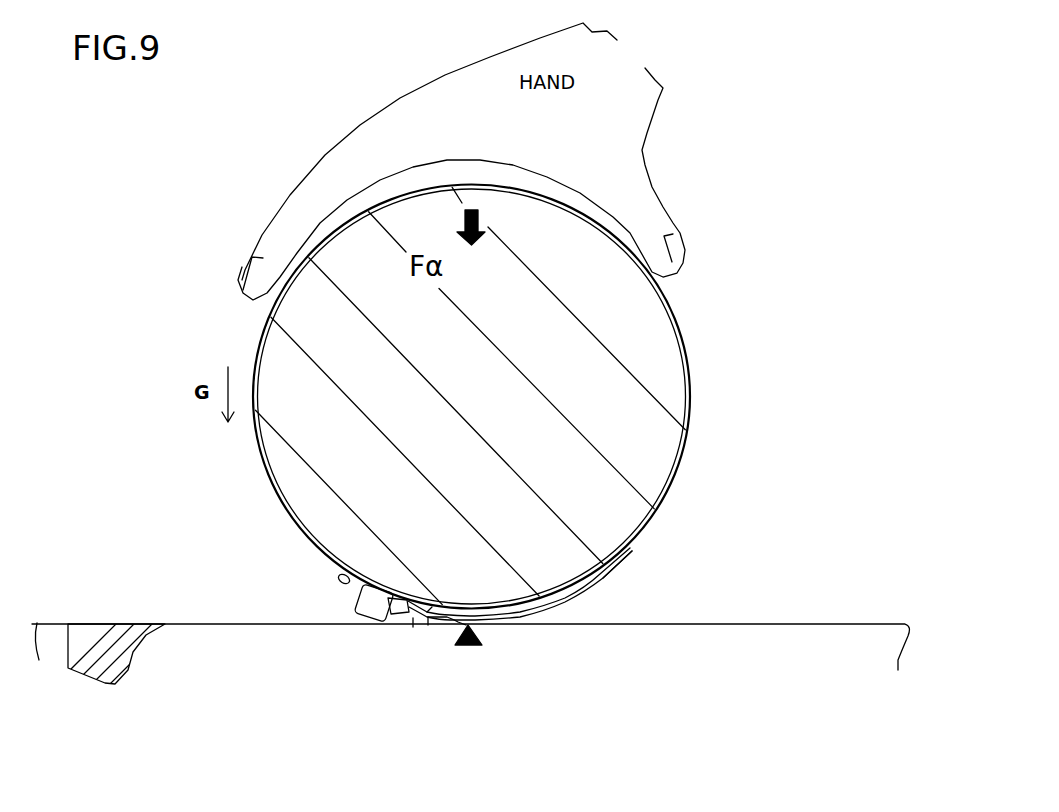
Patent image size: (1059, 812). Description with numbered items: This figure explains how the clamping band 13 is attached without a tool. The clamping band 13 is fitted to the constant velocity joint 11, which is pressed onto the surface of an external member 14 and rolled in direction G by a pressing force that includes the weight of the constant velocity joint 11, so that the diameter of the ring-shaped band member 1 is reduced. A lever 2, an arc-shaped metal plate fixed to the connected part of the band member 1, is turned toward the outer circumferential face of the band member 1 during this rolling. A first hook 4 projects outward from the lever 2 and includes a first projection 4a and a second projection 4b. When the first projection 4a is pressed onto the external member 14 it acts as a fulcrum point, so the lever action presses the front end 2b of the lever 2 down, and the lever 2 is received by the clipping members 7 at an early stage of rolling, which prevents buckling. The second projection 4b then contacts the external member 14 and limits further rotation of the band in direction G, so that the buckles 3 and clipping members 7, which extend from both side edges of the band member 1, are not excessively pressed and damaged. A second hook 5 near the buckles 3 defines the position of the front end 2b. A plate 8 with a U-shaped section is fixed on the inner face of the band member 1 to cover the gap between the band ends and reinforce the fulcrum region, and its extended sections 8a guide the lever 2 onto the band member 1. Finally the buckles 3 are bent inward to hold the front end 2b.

The band member 1 is at (692, 367).
The constant velocity joint 11 is at (667, 453).
The clamping band 13 is at (248, 347).
The external member 14 is at (120, 623).
The lever 2 is at (432, 607).
The end of the lever 2b is at (417, 623).
The buckles 3 is at (365, 607).
The first hook 4 is at (445, 623).
The first projection 4a is at (473, 622).
The second projection 4b is at (430, 625).
The second hook 5 is at (327, 582).
The clipping members 7 is at (392, 612).
The plate 8 is at (502, 607).
The extended sections 8a is at (533, 611).